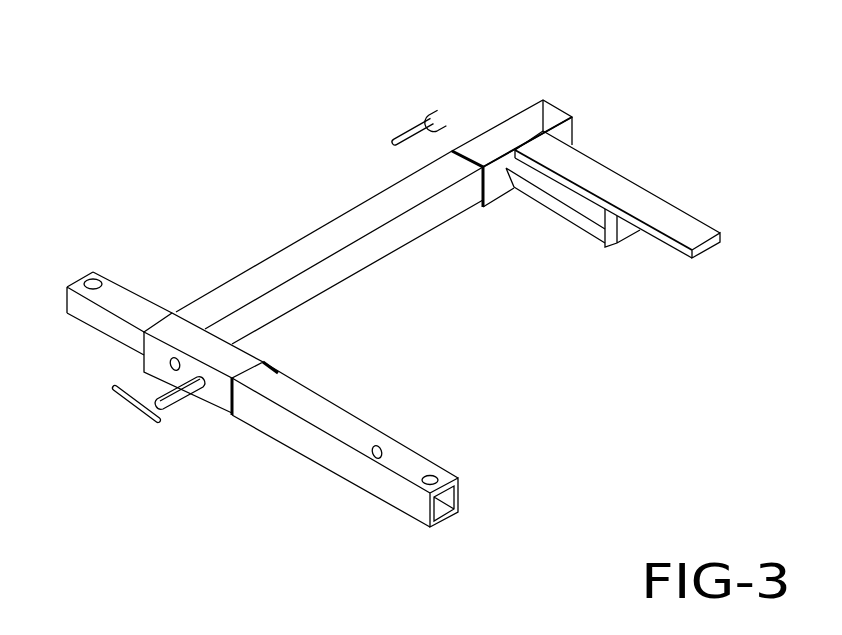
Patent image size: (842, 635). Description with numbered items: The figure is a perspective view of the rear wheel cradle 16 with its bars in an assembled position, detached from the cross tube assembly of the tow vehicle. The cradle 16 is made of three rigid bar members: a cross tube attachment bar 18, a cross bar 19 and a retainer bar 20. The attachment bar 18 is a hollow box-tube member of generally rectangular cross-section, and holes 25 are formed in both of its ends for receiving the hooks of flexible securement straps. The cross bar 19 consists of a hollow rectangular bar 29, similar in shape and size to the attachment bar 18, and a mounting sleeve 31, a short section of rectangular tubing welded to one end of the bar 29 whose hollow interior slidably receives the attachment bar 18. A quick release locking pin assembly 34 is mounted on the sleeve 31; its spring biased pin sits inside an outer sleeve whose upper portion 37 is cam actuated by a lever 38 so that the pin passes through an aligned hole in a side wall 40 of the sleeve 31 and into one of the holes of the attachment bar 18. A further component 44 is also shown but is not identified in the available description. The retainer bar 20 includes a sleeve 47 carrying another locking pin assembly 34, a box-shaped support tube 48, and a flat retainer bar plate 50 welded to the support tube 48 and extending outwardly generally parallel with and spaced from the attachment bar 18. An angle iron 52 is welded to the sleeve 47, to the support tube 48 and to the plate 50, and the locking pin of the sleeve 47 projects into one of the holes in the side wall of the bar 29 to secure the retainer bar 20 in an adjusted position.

The cradle 16 is at (268, 183).
The cross tube attachment bar 18 is at (352, 403).
The cross bar 19 is at (348, 200).
The retainer bar 20 is at (618, 154).
The holes 25 is at (94, 280).
The hollow rectangular bar 29 is at (383, 243).
The mounting sleeve 31 is at (228, 362).
The quick release locking pin assembly 34 is at (182, 408).
The upper portion 37 is at (167, 418).
The lever 38 is at (125, 390).
The side wall 40 is at (157, 357).
The tubular member 44 is at (393, 492).
The sleeve 47 is at (513, 128).
The box-shaped support tube 48 is at (592, 228).
The flat retainer bar plate 50 is at (648, 202).
The angle iron 52 is at (550, 188).